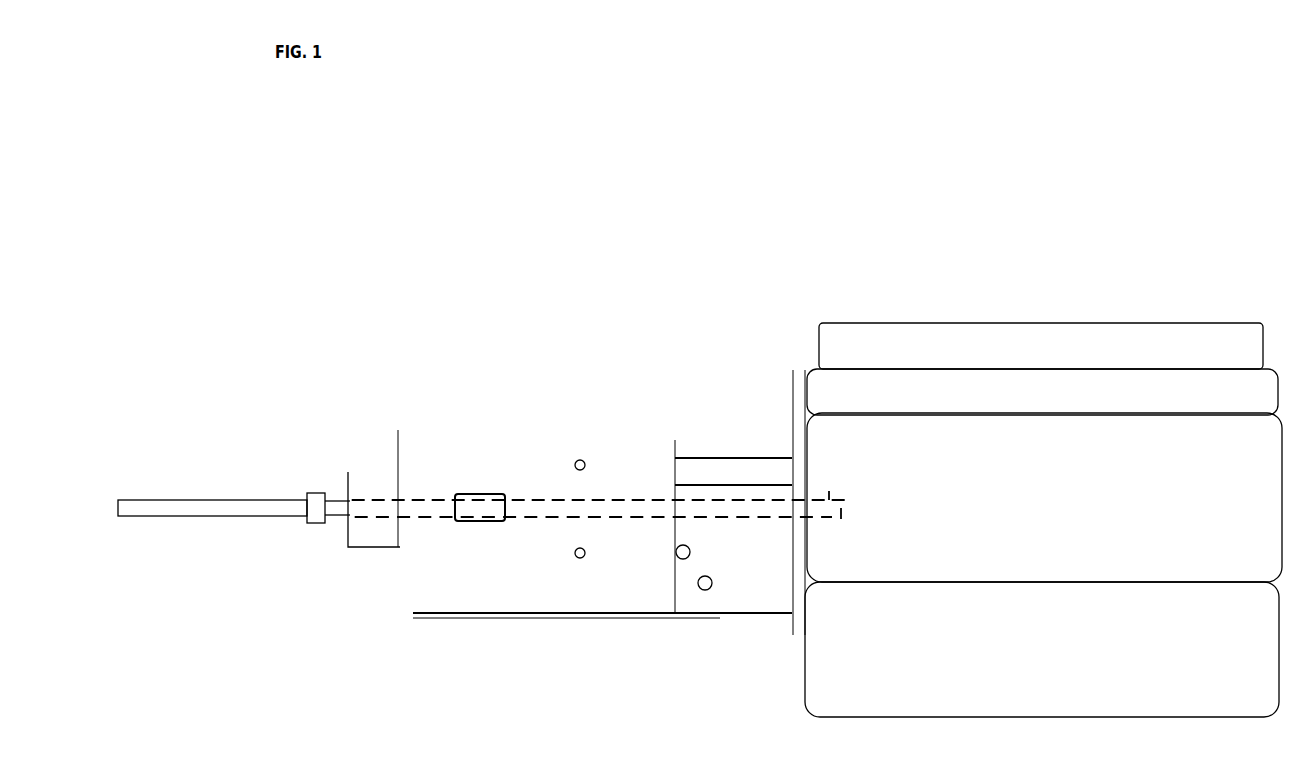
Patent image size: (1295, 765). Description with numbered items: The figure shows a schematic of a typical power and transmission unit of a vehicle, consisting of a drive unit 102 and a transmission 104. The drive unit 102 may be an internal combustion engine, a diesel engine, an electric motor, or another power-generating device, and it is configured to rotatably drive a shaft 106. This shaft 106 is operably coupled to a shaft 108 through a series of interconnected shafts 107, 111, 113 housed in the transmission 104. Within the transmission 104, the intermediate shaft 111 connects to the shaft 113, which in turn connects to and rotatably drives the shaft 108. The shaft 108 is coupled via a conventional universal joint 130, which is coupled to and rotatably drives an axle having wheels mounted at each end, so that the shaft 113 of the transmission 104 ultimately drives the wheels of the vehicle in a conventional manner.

The drive unit 102 is at (892, 343).
The transmission 104 is at (568, 425).
The shaft 106 is at (827, 503).
The shaft 107 is at (733, 492).
The shaft 108 is at (170, 497).
The intermediate shaft 111 is at (473, 503).
The shaft 113 is at (379, 492).
The universal joint 130 is at (312, 492).